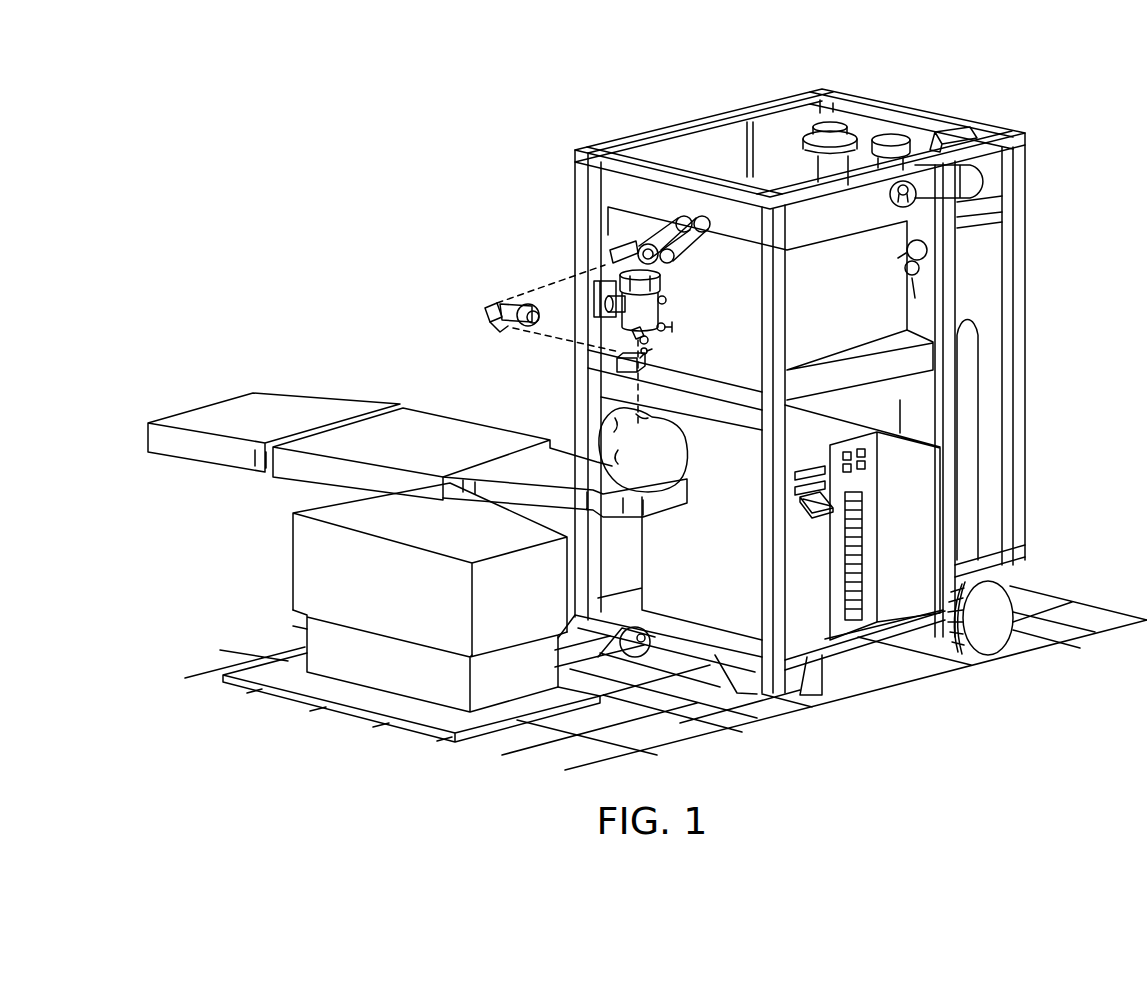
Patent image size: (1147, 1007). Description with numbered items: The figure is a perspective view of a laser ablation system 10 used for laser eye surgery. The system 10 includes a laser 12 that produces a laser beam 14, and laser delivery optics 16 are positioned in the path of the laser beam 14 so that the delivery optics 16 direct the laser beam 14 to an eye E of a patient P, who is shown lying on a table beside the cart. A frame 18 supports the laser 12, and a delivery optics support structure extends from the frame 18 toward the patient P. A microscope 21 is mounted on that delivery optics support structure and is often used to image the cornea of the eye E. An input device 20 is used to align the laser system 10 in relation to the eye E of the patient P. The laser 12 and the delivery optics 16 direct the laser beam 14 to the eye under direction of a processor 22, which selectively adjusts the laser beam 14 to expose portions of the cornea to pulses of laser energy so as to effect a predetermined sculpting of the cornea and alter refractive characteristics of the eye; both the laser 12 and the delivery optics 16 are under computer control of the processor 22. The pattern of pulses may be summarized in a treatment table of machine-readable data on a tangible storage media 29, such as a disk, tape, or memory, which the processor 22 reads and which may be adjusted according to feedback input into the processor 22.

The laser ablation system 10 is at (404, 160).
The laser 12 is at (1056, 245).
The laser beam 14 is at (542, 287).
The laser delivery optics 16 is at (497, 327).
The frame 18 is at (657, 142).
The input device 20 is at (717, 392).
The microscope 21 is at (662, 280).
The processor 22 is at (858, 660).
The tangible storage media 29 is at (808, 508).
The eye E is at (645, 413).
The patient P is at (688, 460).